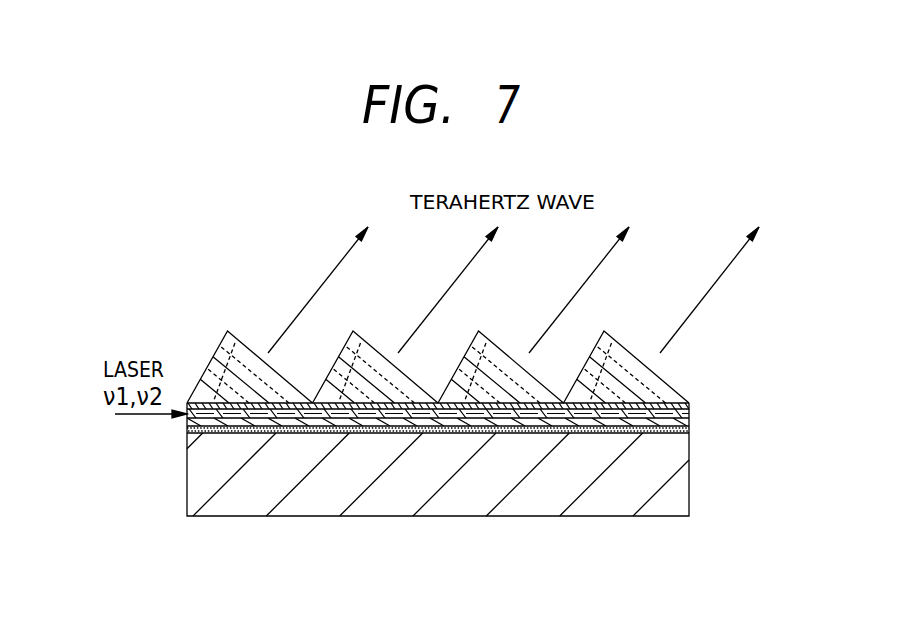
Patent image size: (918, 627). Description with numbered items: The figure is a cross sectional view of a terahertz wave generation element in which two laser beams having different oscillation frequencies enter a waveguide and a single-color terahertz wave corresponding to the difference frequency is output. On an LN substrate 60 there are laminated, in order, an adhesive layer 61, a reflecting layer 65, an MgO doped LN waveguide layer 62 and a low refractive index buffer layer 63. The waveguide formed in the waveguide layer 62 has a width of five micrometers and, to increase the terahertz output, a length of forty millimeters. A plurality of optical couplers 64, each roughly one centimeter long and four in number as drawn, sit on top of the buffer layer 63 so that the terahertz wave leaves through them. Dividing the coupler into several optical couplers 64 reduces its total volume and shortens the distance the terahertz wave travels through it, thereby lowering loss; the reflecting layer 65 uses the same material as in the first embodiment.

The LN substrate 60 is at (682, 477).
The adhesive layer 61 is at (690, 430).
The MgO doped LN waveguide layer 62 is at (690, 414).
The low refractive index buffer layer 63 is at (690, 405).
The optical coupler 64 is at (630, 348).
The reflecting layer 65 is at (690, 426).